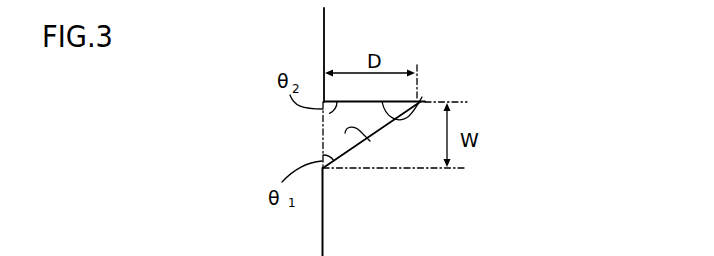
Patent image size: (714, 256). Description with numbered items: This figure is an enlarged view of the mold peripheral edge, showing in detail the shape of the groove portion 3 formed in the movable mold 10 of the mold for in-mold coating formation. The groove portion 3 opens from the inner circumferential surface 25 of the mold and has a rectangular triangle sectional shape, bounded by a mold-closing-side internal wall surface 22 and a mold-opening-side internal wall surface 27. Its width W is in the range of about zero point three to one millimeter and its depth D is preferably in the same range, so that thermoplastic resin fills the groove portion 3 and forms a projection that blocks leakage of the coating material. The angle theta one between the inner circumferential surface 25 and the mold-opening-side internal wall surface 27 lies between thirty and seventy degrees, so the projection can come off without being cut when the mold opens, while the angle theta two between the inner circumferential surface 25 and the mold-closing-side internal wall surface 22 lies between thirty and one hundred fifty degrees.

The groove portion 3 is at (289, 140).
The movable mold 10 is at (403, 53).
The mold-closing-side internal wall surface 22 is at (422, 97).
The inner circumferential surface 25 is at (323, 43).
The mold-opening-side internal wall surface 27 is at (345, 131).